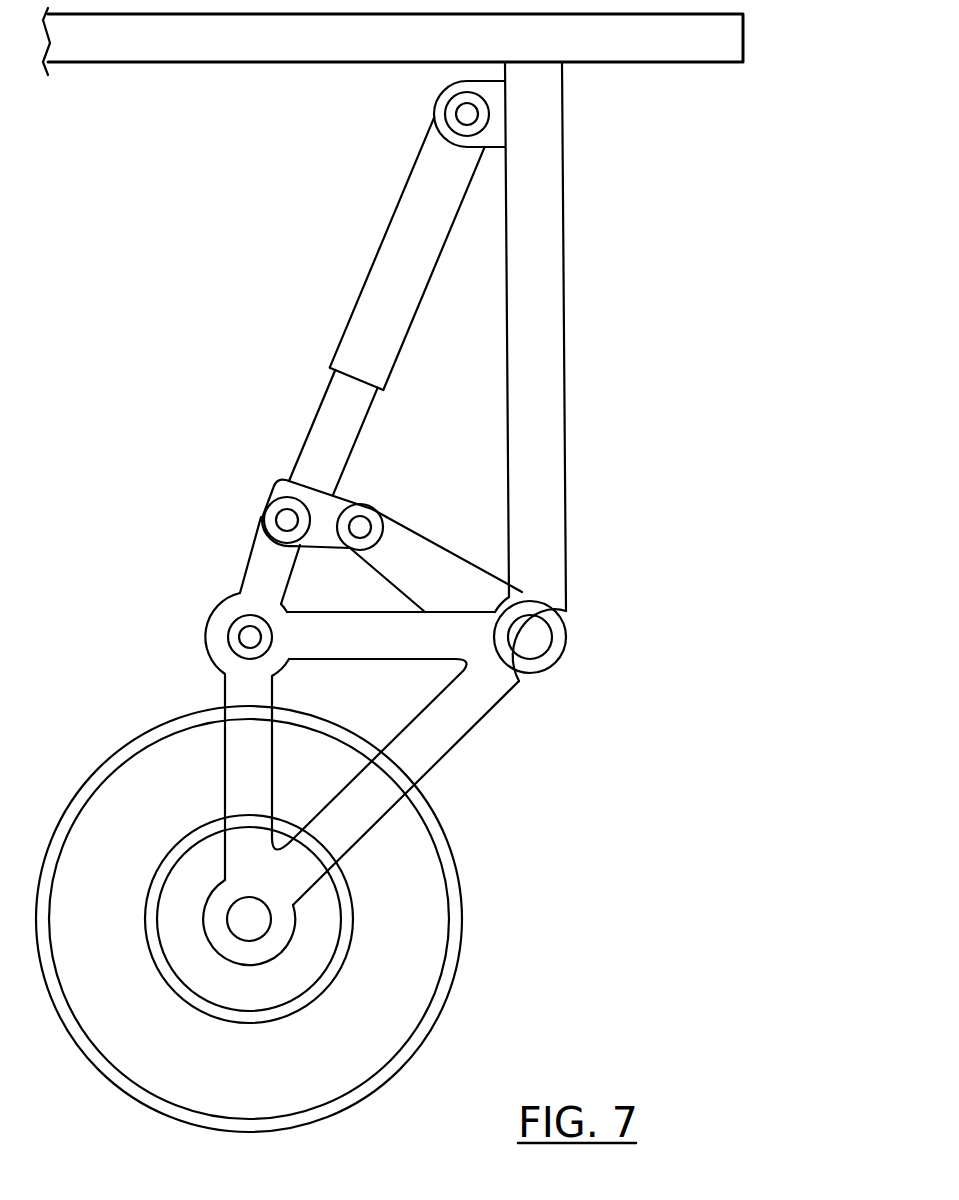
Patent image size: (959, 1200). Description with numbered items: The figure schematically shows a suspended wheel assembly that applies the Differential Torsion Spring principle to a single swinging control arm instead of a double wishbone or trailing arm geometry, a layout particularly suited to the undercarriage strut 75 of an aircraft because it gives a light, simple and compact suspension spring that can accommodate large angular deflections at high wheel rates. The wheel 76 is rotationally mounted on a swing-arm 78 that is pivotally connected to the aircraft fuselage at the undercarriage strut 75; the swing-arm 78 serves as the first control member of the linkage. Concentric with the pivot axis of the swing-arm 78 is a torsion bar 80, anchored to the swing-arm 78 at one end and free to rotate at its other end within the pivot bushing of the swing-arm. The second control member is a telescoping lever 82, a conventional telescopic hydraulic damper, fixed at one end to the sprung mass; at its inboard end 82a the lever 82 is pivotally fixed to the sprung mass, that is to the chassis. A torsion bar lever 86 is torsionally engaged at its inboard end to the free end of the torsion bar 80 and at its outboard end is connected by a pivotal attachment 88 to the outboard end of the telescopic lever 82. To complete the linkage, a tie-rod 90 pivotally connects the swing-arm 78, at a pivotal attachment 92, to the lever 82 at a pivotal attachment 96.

The undercarriage strut 75 is at (557, 413).
The wheel 76 is at (422, 958).
The swing-arm 78 is at (433, 742).
The torsion bar 80 is at (532, 638).
The telescoping lever 82 is at (328, 408).
The inboard end 82a is at (463, 111).
The torsion bar lever 86 is at (432, 553).
The pivotal attachment 88 is at (362, 527).
The tie-rod 90 is at (262, 555).
The pivotal attachment 92 is at (248, 637).
The pivotal attachment 96 is at (285, 518).